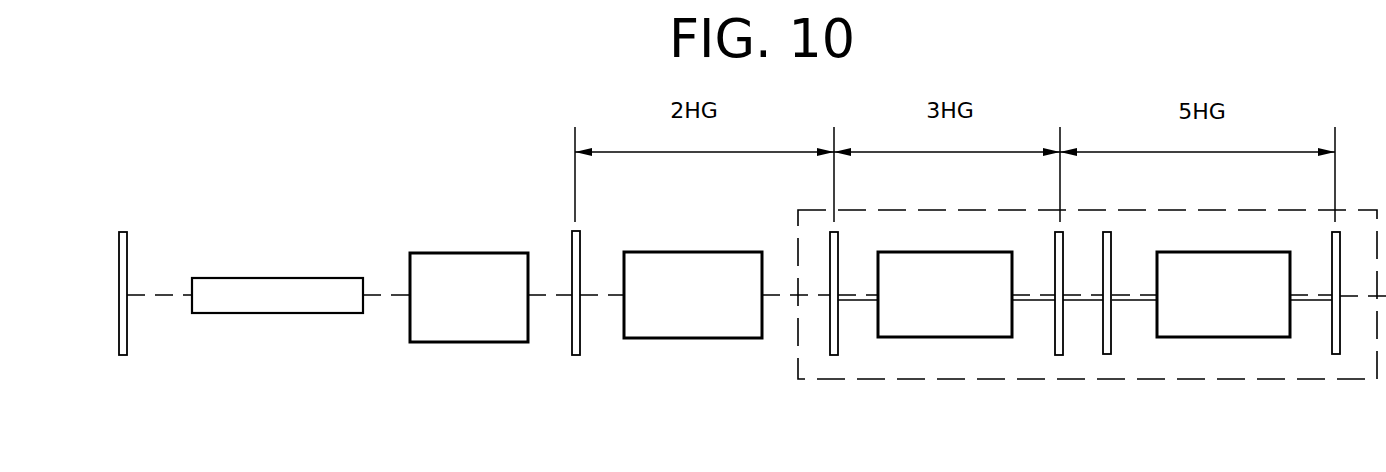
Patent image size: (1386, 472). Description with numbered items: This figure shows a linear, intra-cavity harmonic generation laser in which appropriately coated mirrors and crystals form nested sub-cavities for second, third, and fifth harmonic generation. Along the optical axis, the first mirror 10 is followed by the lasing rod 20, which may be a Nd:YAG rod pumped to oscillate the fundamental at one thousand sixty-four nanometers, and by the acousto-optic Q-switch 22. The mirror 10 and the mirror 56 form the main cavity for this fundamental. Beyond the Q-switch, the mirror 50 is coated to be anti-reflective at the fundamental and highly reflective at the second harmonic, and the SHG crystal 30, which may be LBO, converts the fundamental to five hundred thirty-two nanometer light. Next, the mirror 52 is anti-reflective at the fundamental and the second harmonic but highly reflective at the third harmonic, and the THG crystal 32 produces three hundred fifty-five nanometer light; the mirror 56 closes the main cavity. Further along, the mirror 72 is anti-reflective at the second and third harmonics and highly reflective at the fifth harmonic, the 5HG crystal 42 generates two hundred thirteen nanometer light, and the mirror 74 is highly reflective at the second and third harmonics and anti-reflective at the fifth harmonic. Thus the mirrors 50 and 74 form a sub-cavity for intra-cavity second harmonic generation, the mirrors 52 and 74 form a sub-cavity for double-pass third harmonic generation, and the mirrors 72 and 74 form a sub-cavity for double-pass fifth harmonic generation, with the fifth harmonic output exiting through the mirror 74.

The first mirror 10 is at (126, 244).
The lasing rod 20 is at (325, 290).
The acousto-optic Q-switch 22 is at (474, 257).
The SHG crystal 30 is at (647, 260).
The second mirror 50 is at (580, 342).
The third mirror 52 is at (838, 243).
The THG crystal 32 is at (932, 338).
The mirror 56 is at (1054, 244).
The mirror 72 is at (1112, 243).
The 5HG crystal 42 is at (1208, 338).
The mirror 74 is at (1332, 245).